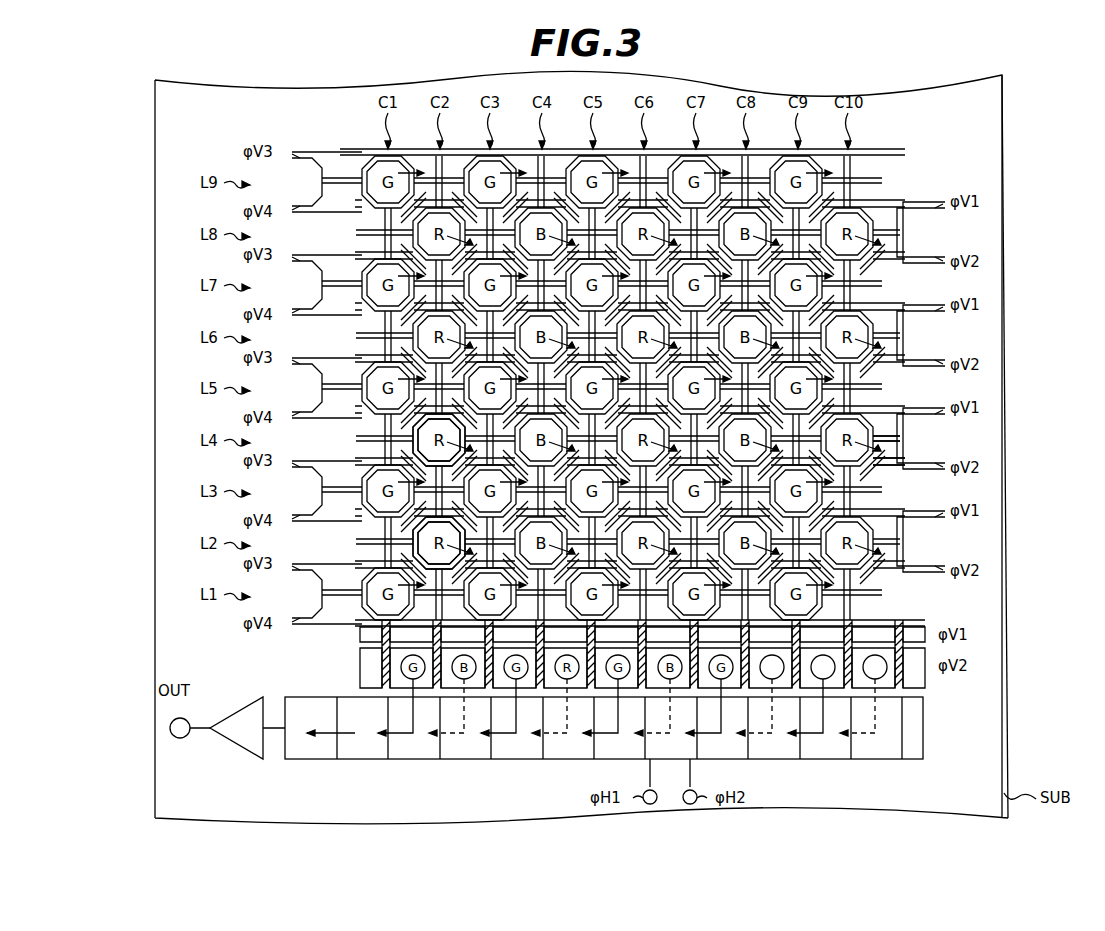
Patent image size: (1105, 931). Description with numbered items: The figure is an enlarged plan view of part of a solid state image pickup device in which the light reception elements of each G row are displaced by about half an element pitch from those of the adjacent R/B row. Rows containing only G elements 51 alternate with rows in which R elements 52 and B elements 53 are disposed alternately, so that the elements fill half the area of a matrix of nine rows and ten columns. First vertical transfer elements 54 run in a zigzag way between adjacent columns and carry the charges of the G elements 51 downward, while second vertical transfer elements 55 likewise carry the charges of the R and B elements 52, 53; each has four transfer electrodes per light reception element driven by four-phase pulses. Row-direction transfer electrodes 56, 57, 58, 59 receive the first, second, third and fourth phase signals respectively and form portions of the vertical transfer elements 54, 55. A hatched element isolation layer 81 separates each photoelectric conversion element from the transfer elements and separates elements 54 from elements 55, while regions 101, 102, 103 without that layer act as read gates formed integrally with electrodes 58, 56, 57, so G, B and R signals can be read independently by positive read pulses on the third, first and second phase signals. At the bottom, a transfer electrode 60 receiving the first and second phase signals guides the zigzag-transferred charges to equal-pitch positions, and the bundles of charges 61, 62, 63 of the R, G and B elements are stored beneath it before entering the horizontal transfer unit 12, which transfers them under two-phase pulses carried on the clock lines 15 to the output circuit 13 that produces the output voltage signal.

The horizontal transfer unit 12 is at (727, 759).
The output circuit 13 is at (244, 712).
The horizontal clock lines 15 is at (690, 776).
The G element 51 is at (360, 622).
The R element 52 is at (410, 447).
The B element 53 is at (410, 550).
The first vertical transfer element 54 is at (835, 148).
The second vertical transfer element 55 is at (860, 148).
The transfer electrode 56 is at (918, 526).
The transfer electrode 57 is at (915, 559).
The transfer electrode 58 is at (327, 579).
The transfer electrode 59 is at (332, 610).
The transfer electrode 60 is at (913, 672).
The bundle of electric charges 61 is at (775, 680).
The bundle of electric charges 62 is at (829, 680).
The bundle of electric charges 63 is at (881, 680).
The element isolation layer 81 is at (880, 397).
The read gate 101 is at (865, 578).
The read gate 102 is at (887, 500).
The read gate 103 is at (885, 470).